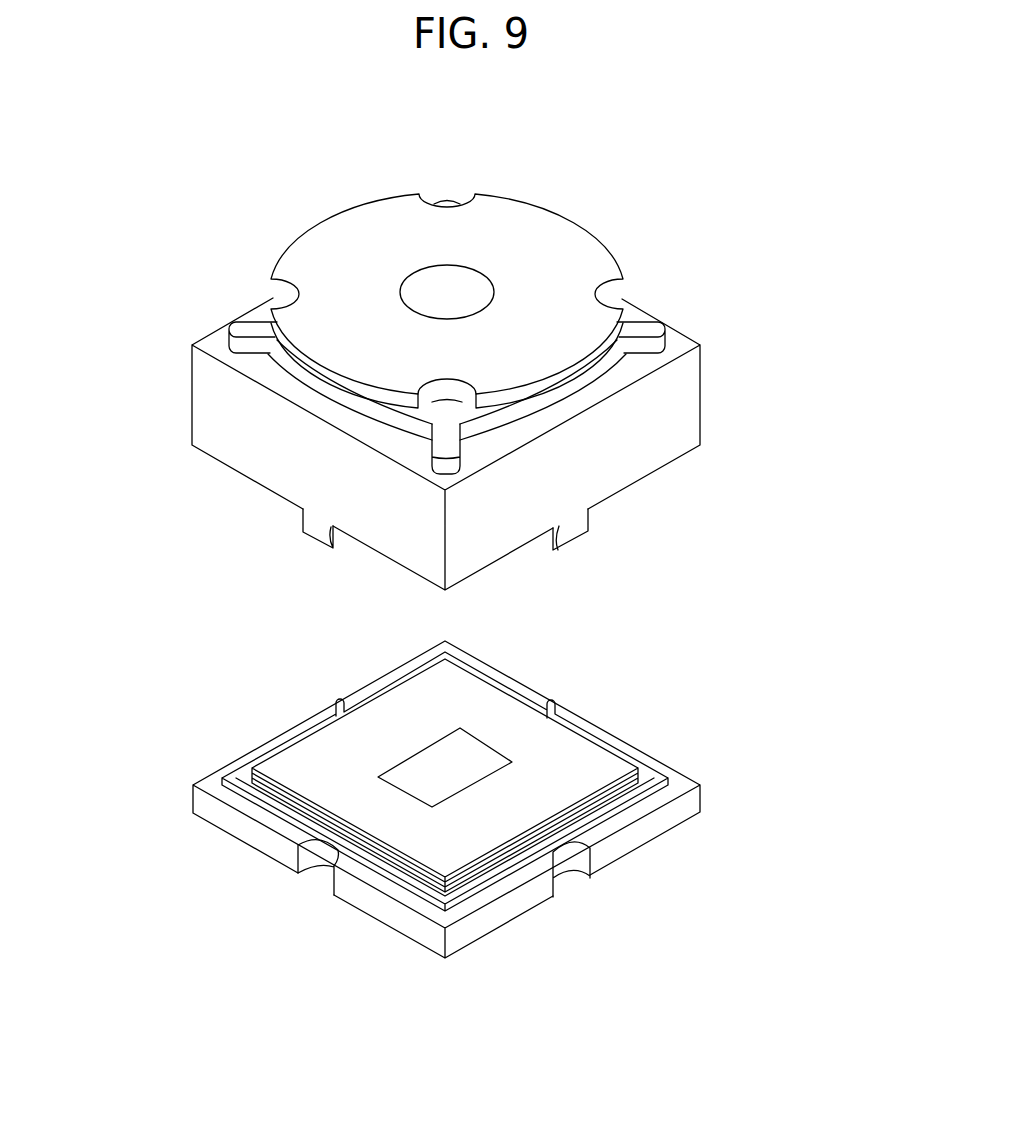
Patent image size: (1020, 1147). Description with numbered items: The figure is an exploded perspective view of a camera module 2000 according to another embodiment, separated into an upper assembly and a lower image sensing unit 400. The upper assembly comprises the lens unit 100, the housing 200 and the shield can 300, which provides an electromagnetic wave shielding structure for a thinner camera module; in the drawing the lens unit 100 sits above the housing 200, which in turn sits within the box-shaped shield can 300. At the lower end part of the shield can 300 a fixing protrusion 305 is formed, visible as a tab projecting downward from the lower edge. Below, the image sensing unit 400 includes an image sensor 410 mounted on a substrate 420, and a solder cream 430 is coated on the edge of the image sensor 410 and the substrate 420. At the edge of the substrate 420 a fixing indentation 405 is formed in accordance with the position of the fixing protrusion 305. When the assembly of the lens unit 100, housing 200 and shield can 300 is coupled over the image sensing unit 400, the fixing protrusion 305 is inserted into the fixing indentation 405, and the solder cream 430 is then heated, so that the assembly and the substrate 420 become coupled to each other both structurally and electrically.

The camera module 2000 is at (103, 162).
The lens unit 100 is at (570, 228).
The housing 200 is at (654, 328).
The shield can 300 is at (686, 399).
The fixing protrusion 305 is at (580, 525).
The image sensing unit 400 is at (855, 735).
The fixing indentation 405 is at (566, 878).
The image sensor 410 is at (598, 766).
The substrate 420 is at (683, 808).
The solder cream 430 is at (233, 778).